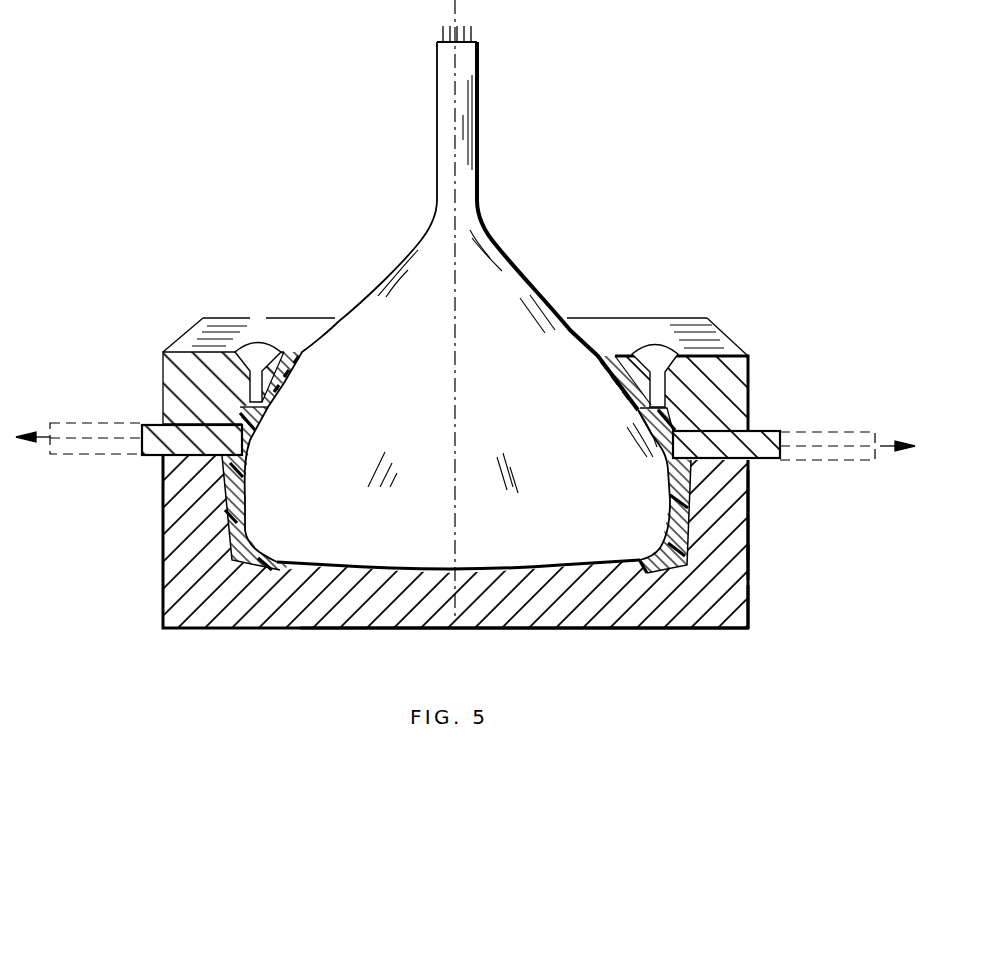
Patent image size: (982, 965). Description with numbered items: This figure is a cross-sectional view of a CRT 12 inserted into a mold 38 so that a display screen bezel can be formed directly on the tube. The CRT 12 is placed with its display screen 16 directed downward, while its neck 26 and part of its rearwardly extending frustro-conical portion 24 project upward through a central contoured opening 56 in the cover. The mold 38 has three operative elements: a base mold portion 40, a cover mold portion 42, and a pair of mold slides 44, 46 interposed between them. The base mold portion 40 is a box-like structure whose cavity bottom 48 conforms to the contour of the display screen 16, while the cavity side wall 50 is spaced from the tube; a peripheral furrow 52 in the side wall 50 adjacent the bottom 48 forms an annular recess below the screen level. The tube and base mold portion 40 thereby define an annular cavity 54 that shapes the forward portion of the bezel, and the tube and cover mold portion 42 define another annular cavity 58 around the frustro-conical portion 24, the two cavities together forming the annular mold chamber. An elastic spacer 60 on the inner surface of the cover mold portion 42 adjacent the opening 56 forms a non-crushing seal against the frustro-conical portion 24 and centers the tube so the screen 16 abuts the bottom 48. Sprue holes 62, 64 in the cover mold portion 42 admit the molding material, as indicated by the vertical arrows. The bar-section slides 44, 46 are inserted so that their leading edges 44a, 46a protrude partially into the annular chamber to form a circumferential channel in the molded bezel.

The CRT 12 is at (547, 306).
The display screen 16 is at (399, 567).
The frustro-conical portion 24 is at (531, 281).
The neck 26 is at (482, 88).
The mold 38 is at (133, 253).
The base mold portion 40 is at (168, 546).
The cover mold portion 42 is at (170, 372).
The mold slide 44 is at (150, 424).
The leading edge 44a is at (255, 442).
The mold slide 46 is at (750, 438).
The leading edge 46a is at (660, 456).
The bottom 48 is at (525, 572).
The side wall 50 is at (698, 520).
The furrow 52 is at (750, 600).
The annular cavity 54 is at (700, 570).
The central contoured opening 56 is at (590, 325).
The annular cavity 58 is at (680, 418).
The elastic spacer 60 is at (284, 366).
The sprue hole 62 is at (660, 320).
The sprue hole 64 is at (258, 318).